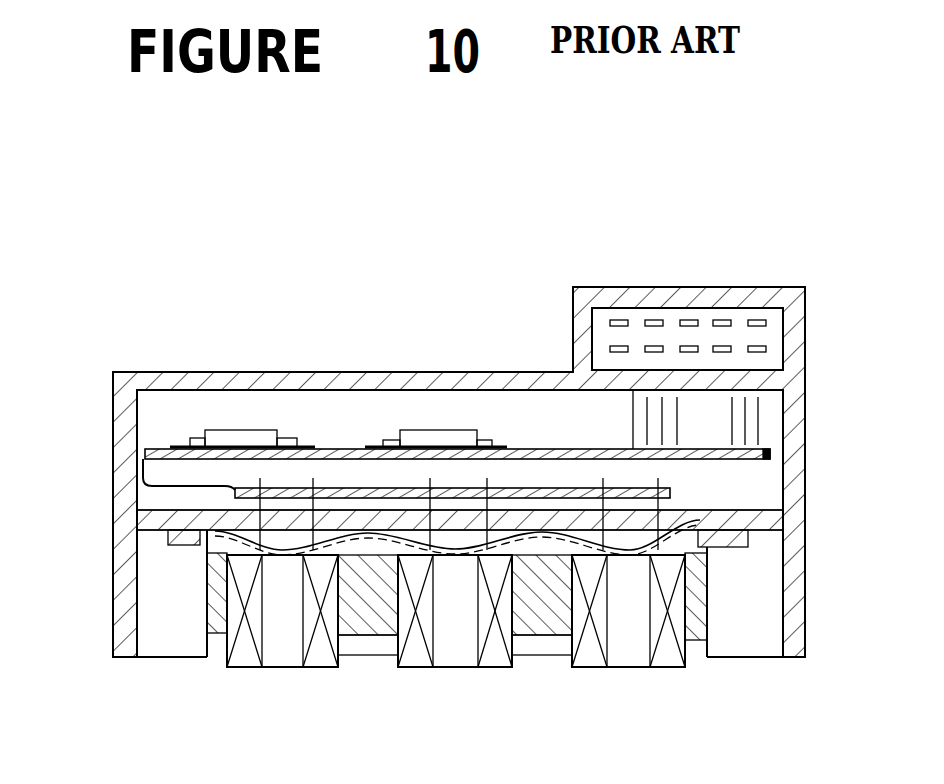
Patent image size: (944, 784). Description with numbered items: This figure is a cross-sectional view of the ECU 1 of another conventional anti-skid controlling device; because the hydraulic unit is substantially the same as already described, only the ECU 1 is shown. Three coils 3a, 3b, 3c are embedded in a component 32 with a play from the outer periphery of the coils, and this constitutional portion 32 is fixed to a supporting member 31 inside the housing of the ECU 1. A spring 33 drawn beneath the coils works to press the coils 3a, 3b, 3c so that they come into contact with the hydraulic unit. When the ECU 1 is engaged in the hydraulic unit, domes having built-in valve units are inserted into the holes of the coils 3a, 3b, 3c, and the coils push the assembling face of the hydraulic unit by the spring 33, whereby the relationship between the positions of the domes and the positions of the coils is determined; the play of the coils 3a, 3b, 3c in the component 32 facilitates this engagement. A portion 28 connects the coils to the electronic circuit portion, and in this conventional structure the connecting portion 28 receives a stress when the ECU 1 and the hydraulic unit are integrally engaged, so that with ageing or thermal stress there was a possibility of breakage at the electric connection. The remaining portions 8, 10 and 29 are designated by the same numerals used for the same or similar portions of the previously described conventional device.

The ECU 1 is at (805, 550).
The coil 3a is at (238, 670).
The coil 3b is at (407, 670).
The coil 3c is at (588, 670).
The circuit board 8 is at (163, 447).
The sound outlet grille 10 is at (765, 340).
The connecting portion 28 is at (313, 482).
The internal space 29 is at (498, 420).
The supporting member 31 is at (110, 518).
The component 32 is at (215, 633).
The spring 33 is at (560, 543).